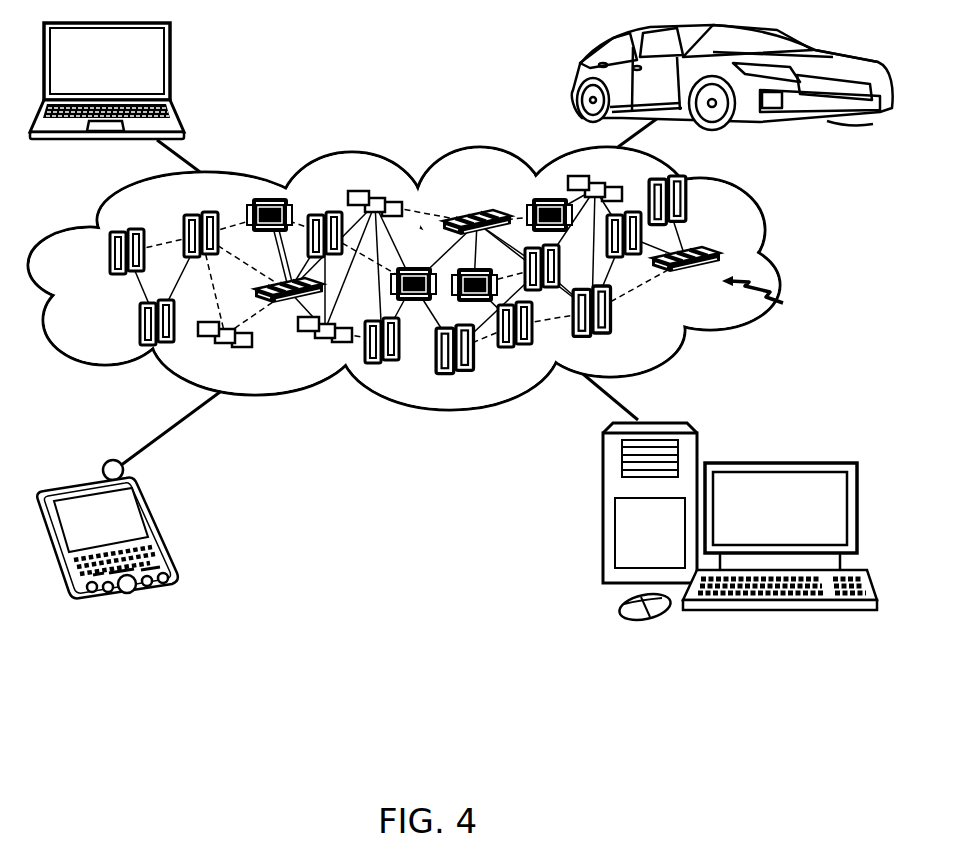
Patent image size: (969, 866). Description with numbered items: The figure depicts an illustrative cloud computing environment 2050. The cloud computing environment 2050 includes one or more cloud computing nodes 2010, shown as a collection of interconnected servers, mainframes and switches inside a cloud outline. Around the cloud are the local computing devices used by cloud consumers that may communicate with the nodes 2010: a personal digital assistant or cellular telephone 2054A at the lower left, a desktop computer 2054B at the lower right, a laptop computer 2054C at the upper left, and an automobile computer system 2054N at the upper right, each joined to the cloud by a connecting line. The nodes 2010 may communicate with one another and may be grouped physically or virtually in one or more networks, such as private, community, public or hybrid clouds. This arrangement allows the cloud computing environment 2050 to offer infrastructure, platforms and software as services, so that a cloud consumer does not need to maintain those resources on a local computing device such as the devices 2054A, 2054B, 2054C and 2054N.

The cloud computing node 2010 is at (780, 297).
The cloud computing environment 2050 is at (777, 260).
The personal digital assistant (PDA) or cellular telephone 2054A is at (160, 527).
The desktop computer 2054B is at (786, 448).
The laptop computer 2054C is at (172, 67).
The automobile computer system 2054N is at (574, 76).